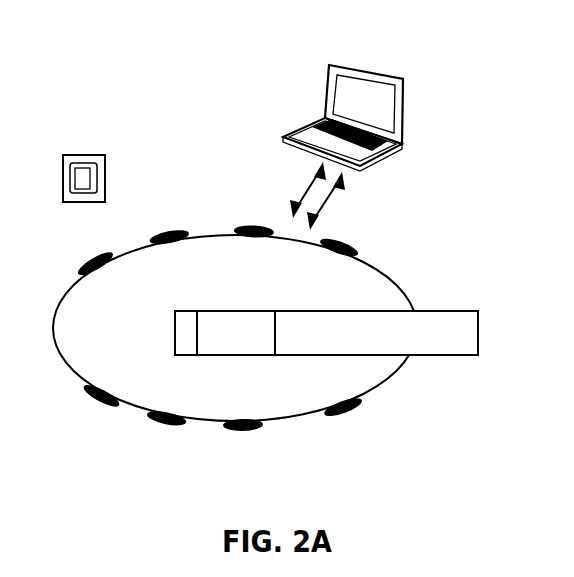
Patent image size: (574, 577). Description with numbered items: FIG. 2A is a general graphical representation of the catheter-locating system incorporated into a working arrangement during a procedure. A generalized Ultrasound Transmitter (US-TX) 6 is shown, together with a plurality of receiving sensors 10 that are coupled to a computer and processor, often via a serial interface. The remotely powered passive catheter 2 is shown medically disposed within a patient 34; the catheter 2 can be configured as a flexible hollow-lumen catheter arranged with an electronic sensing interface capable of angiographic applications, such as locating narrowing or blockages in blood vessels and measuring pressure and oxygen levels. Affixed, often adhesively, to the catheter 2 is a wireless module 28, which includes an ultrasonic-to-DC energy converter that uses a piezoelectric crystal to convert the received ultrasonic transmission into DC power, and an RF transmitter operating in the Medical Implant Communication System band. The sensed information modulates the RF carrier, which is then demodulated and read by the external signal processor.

The Ultrasound Transmitter (US-TX) 6 is at (103, 187).
The patient 34 is at (367, 263).
The wireless module 28 is at (253, 311).
The remotely powered passive catheter 2 is at (422, 356).
The receiving sensors 10 is at (347, 413).